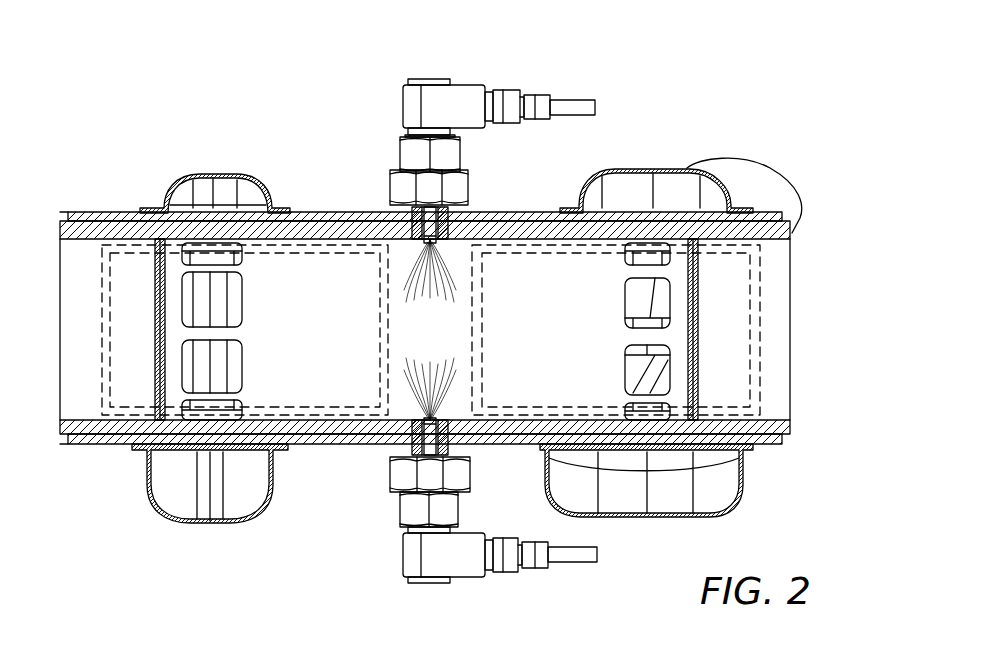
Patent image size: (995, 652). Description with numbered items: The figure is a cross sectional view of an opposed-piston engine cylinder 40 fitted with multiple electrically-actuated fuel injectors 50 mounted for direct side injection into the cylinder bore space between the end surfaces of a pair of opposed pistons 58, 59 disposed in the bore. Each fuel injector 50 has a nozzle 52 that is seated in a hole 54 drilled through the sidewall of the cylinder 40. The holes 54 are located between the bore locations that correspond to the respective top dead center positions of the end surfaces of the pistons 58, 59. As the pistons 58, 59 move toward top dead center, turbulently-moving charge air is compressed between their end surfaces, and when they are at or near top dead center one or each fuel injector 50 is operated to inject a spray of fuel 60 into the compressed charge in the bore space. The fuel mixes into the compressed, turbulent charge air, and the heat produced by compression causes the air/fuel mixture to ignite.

The opposed-piston engine cylinder 40 is at (286, 155).
The fuel injector 50 is at (463, 84).
The nozzle 52 is at (447, 220).
The hole 54 is at (423, 242).
The opposed piston 58 is at (331, 241).
The opposed piston 59 is at (518, 238).
The spray of fuel 60 is at (412, 287).